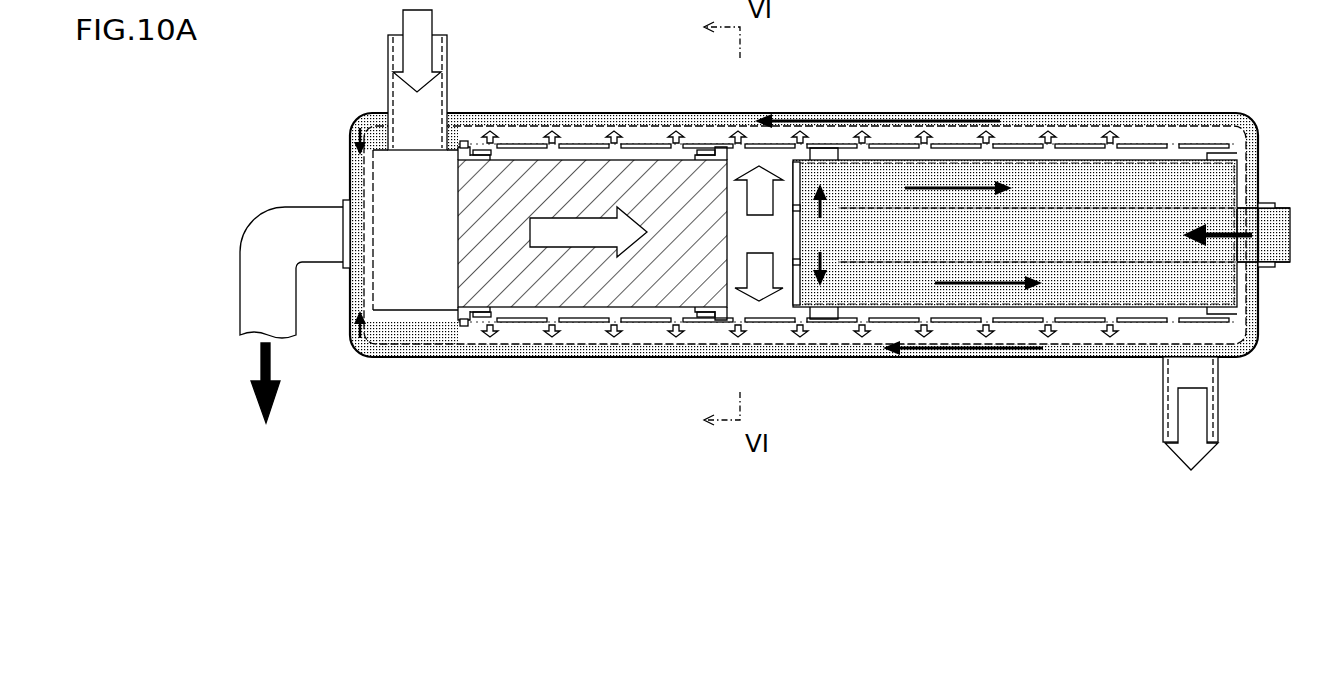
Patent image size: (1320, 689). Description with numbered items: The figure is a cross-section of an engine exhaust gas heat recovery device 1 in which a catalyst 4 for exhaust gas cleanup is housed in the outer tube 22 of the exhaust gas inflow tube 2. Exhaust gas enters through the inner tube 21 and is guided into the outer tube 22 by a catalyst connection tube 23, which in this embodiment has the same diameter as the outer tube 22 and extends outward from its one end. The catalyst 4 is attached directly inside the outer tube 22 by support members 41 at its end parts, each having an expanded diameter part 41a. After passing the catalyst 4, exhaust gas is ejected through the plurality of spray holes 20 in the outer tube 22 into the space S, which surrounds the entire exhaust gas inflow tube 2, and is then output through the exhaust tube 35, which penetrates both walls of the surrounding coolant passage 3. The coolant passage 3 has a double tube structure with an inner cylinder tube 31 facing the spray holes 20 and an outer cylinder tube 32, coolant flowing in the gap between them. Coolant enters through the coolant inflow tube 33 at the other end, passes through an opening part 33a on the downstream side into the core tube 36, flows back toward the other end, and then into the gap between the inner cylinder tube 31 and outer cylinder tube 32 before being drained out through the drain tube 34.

The engine exhaust gas heat recovery device 1 is at (267, 92).
The exhaust gas inflow tube 2 is at (847, 229).
The coolant passage 3 is at (804, 180).
The catalyst 4 is at (580, 175).
The spray holes 20 is at (617, 144).
The inner tube 21 is at (448, 58).
The outer tube 22 is at (518, 323).
The catalyst connection tube 23 is at (417, 348).
The inner cylinder tube 31 is at (1070, 125).
The outer cylinder tube 32 is at (1015, 114).
The coolant inflow tube 33 is at (1270, 207).
The opening part 33a is at (832, 265).
The drain tube 34 is at (240, 298).
The exhaust tube 35 is at (1220, 406).
The core tube 36 is at (1185, 165).
The support member 41 is at (486, 314).
The expanded diameter part 41a is at (466, 322).
The space S is at (1152, 135).